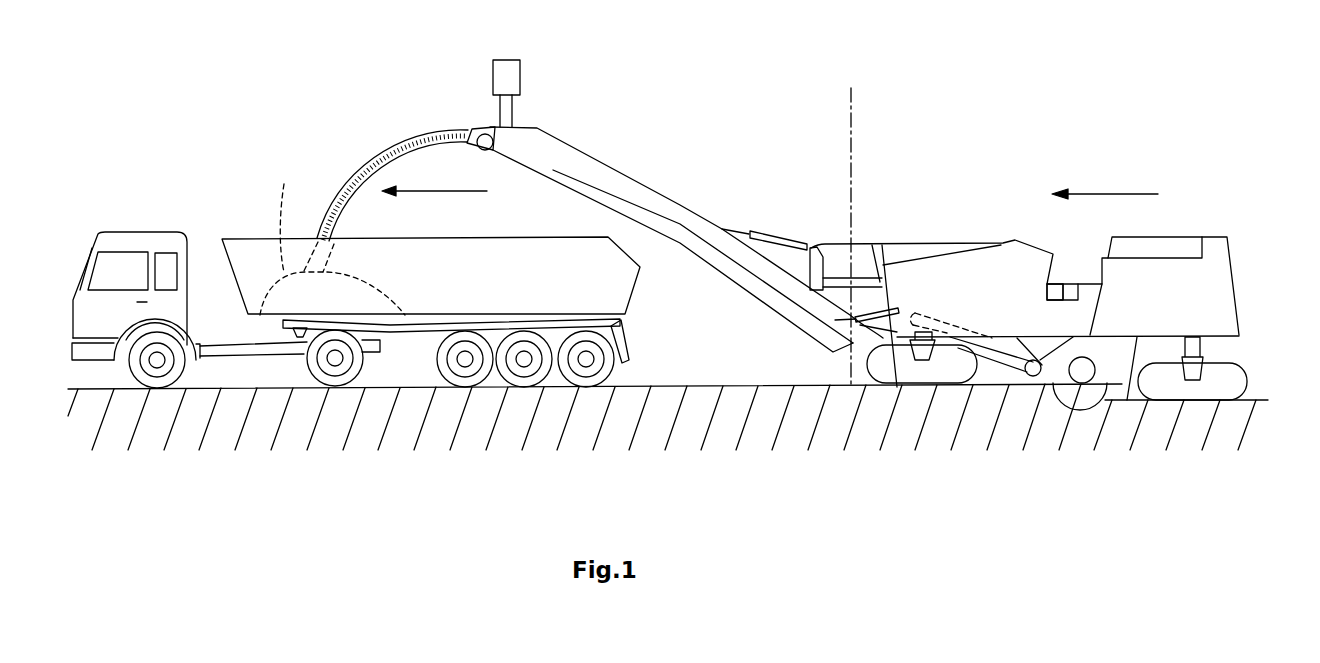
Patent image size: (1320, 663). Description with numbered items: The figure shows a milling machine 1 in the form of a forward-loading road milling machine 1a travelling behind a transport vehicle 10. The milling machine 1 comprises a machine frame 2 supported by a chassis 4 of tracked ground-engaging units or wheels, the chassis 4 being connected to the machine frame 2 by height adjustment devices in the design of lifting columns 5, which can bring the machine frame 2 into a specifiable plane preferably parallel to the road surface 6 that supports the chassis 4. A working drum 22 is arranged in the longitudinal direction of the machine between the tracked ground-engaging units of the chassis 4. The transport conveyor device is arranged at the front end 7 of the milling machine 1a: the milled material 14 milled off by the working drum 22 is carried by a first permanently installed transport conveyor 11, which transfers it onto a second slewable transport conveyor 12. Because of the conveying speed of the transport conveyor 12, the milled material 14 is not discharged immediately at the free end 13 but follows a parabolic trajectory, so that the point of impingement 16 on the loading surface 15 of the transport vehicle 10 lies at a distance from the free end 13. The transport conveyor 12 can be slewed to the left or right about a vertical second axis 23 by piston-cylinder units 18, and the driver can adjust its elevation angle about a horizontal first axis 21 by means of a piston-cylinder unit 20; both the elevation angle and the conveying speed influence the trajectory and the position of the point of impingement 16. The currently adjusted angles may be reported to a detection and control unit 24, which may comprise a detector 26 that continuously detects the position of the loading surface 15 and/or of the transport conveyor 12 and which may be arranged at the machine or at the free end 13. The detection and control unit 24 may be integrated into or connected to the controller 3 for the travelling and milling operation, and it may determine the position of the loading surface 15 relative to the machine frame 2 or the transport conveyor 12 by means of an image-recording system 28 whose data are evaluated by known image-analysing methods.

The milling machine 1 is at (1053, 298).
The forward-loading road milling machine 1a is at (1001, 298).
The machine frame 2 is at (1024, 276).
The controller 3 is at (1152, 227).
The detection and control unit 24 is at (1055, 295).
The chassis 4 is at (1256, 369).
The lifting columns 5 is at (920, 362).
The road surface 6 is at (668, 387).
The front end 7 is at (888, 232).
The transport vehicle 10 is at (262, 206).
The first transport conveyor 11 is at (997, 350).
The second transport conveyor 12 is at (650, 186).
The free end 13 is at (453, 155).
The milled material 14 is at (338, 190).
The loading surface 15 is at (447, 313).
The point of impingement 16 is at (273, 216).
The piston-cylinder units 18 is at (893, 385).
The piston-cylinder unit 20 is at (777, 231).
The horizontal first axis 21 is at (848, 348).
The working drum 22 is at (1079, 386).
The vertical second axis 23 is at (853, 122).
The detector 26 is at (545, 64).
The image-recording system 28 is at (510, 64).